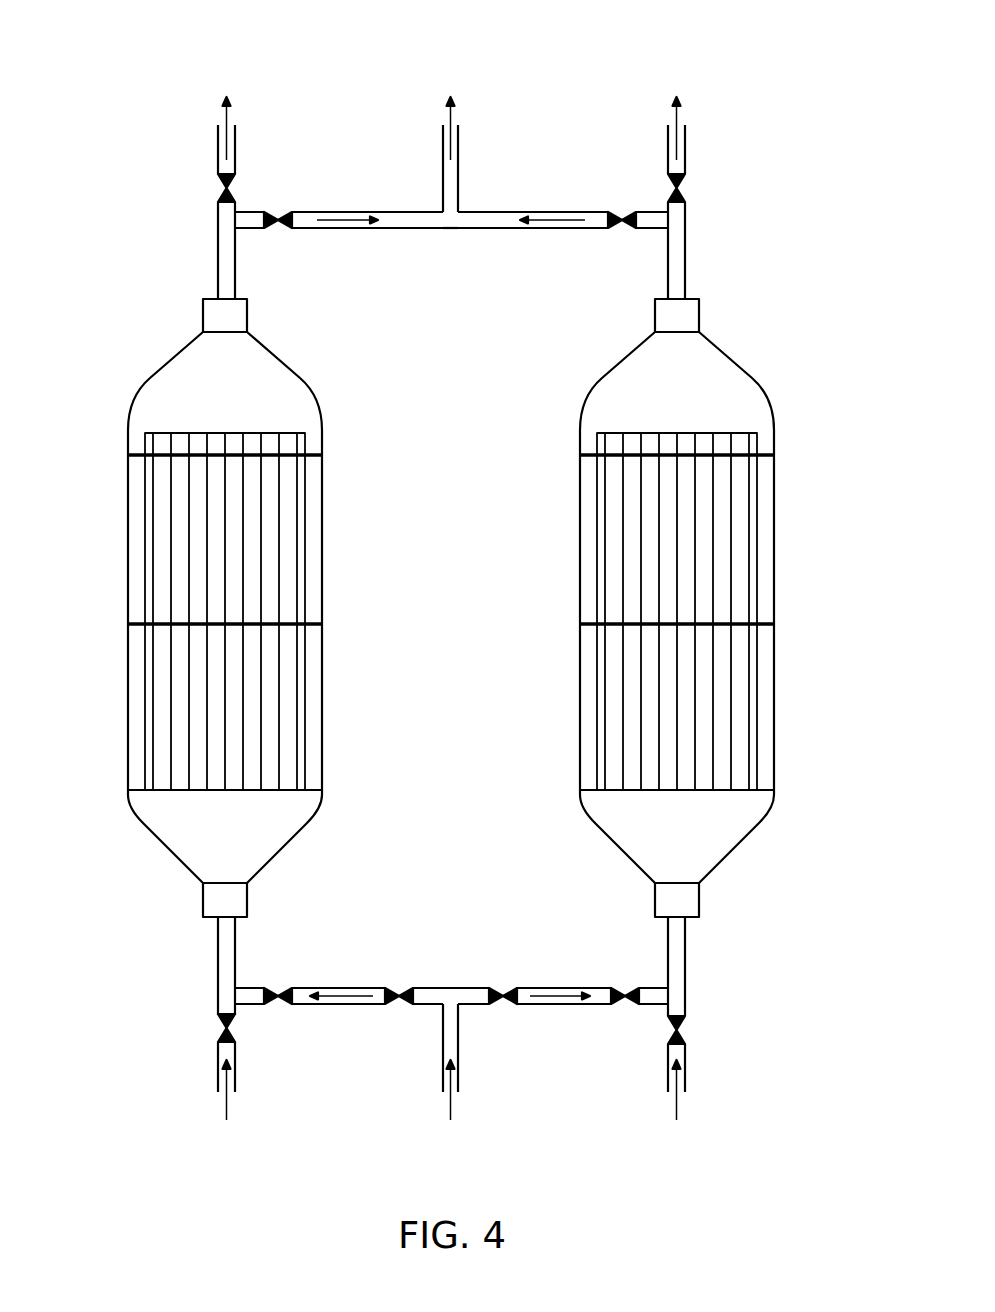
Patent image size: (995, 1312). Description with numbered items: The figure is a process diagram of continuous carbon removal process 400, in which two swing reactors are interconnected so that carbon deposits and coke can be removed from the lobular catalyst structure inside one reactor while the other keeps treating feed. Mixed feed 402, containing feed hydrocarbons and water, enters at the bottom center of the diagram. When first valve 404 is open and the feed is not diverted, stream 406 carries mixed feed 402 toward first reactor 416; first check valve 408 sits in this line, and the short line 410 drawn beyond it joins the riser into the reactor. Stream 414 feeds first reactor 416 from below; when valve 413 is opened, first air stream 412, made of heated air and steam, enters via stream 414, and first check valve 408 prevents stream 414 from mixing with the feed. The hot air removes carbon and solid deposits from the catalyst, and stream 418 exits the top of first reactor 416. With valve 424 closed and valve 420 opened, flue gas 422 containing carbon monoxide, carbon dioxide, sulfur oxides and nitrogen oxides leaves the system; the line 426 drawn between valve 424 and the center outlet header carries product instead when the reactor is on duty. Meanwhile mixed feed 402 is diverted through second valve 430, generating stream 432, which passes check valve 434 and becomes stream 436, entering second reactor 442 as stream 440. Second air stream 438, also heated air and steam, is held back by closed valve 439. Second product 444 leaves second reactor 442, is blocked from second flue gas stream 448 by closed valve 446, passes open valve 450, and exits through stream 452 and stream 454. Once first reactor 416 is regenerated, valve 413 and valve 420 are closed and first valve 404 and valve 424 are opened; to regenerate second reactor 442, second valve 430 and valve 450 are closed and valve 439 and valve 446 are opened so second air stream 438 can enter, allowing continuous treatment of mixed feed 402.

The continuous carbon removal process 400 is at (110, 36).
The mixed feed 402 is at (443, 1078).
The first valve 404 is at (503, 988).
The stream 406 is at (550, 988).
The first check valve 408 is at (625, 988).
The conduit 410 is at (655, 1005).
The first air stream 412 is at (685, 1080).
The valve 413 is at (685, 1030).
The stream 414 is at (685, 950).
The first reactor 416 is at (774, 690).
The stream 418 is at (685, 270).
The valve 420 is at (685, 180).
The flue gas 422 is at (685, 142).
The valve 424 is at (622, 212).
The conduit 426 is at (512, 229).
The second valve 430 is at (399, 1004).
The stream 432 is at (327, 988).
The check valve 434 is at (276, 1004).
The stream 436 is at (247, 988).
The second air stream 438 is at (218, 1075).
The valve 439 is at (218, 1028).
The stream 440 is at (218, 950).
The second reactor 442 is at (156, 836).
The second product 444 is at (218, 252).
The valve 446 is at (218, 188).
The second flue gas stream 448 is at (218, 148).
The valve 450 is at (278, 212).
The stream 452 is at (342, 229).
The stream 454 is at (458, 145).